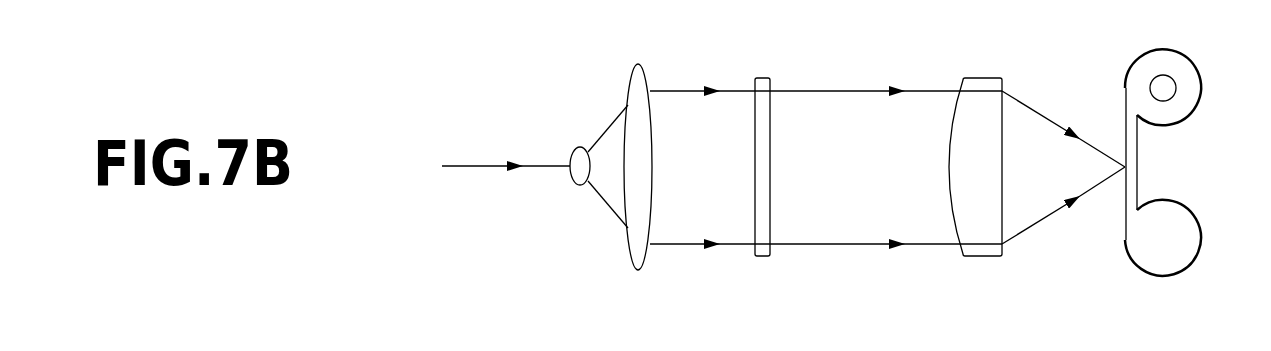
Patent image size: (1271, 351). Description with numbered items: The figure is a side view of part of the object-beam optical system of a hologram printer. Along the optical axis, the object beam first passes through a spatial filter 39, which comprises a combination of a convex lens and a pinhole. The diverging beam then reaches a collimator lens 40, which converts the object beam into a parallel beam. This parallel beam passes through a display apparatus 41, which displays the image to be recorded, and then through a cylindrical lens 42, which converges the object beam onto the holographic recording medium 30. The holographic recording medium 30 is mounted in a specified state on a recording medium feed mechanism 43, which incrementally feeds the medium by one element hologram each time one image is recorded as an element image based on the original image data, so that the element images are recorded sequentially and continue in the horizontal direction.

The holographic recording medium 30 is at (1140, 165).
The spatial filter 39 is at (581, 165).
The collimator lens 40 is at (638, 80).
The display apparatus 41 is at (763, 82).
The cylindrical lens 42 is at (980, 83).
The recording medium feed mechanism 43 is at (1187, 68).